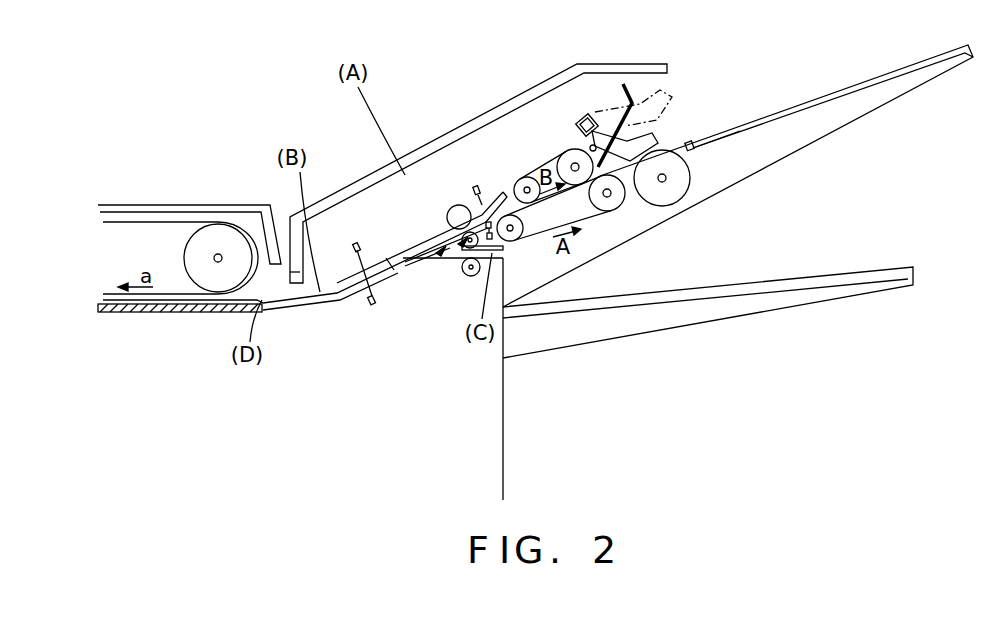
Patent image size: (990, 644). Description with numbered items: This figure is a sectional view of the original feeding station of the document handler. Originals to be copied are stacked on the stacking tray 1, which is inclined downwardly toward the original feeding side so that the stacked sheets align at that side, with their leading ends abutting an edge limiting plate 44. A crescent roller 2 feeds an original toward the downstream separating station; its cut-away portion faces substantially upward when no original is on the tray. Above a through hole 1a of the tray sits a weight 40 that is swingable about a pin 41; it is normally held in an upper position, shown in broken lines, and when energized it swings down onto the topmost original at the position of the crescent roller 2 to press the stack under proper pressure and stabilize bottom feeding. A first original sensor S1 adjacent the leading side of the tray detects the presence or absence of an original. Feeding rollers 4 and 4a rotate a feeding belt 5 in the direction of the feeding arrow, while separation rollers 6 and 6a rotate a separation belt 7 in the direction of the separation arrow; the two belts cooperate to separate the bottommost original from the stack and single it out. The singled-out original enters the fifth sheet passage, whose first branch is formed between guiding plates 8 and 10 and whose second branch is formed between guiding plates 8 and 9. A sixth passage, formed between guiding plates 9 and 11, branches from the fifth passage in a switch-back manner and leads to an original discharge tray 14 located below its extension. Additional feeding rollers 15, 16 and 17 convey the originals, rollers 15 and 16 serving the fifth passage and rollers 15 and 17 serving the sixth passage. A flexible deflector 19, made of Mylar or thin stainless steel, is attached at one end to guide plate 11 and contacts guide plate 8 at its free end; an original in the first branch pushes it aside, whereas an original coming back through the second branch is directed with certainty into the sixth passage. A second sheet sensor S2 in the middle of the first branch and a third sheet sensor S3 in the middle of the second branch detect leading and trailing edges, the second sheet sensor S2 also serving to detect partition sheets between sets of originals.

The stacking tray 1 is at (923, 78).
The through hole 1a is at (693, 140).
The crescent roller 2 is at (688, 198).
The feeding roller 4 is at (513, 242).
The feeding roller 4a is at (615, 209).
The feeding belt 5 is at (592, 232).
The separation roller 6 is at (476, 187).
The separation roller 6a is at (580, 110).
The separation belt 7 is at (515, 178).
The guiding plate 8 is at (370, 296).
The guiding plate 9 is at (390, 265).
The guiding plate 10 is at (410, 250).
The guiding plate 11 is at (452, 262).
The original discharge tray 14 is at (852, 290).
The feeding roller 15 is at (463, 270).
The feeding roller 16 is at (447, 212).
The feeding roller 17 is at (476, 276).
The deflector 19 is at (417, 266).
The weight 40 is at (680, 140).
The pin 41 is at (594, 145).
The edge limiting plate 44 is at (630, 92).
The first original sensor S1 is at (622, 82).
The second sheet sensor S2 is at (455, 206).
The third sheet sensor S3 is at (356, 242).